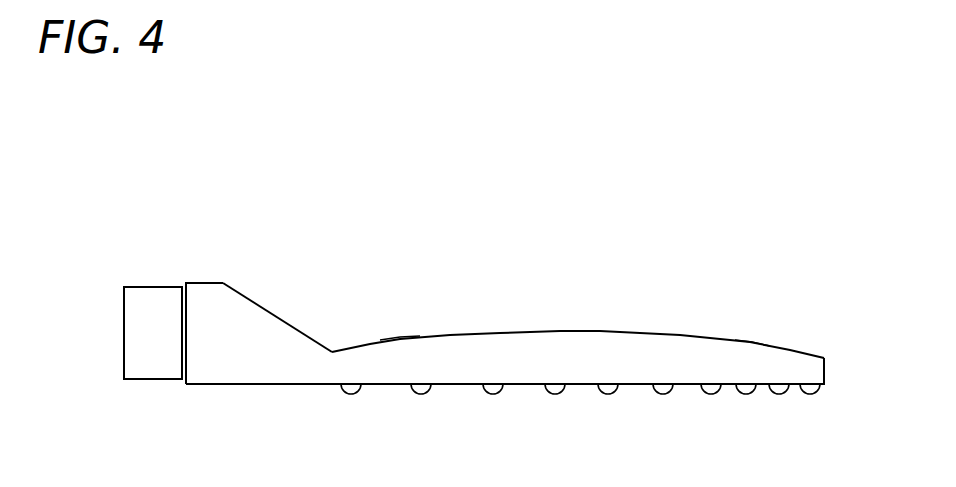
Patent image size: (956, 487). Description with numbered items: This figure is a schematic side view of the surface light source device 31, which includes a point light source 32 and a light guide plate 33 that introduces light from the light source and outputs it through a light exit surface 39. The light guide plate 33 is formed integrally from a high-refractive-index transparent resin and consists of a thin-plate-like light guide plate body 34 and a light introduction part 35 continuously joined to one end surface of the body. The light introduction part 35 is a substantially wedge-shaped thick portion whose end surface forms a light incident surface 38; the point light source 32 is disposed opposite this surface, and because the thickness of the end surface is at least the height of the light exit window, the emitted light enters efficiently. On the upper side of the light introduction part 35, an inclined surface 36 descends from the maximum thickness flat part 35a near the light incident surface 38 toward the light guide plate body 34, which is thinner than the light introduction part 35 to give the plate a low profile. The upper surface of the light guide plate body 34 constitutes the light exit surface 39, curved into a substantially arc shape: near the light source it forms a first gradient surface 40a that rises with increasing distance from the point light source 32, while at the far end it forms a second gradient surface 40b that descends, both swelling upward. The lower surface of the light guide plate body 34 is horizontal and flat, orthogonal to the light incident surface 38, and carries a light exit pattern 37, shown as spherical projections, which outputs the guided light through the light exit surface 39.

The surface light source device 31 is at (640, 192).
The point light source 32 is at (152, 303).
The light guide plate 33 is at (635, 377).
The light guide plate body 34 is at (446, 360).
The light introduction part 35 is at (248, 353).
The flat part 35a is at (204, 283).
The inclined surface 36 is at (270, 308).
The light exit pattern 37 is at (580, 421).
The light incident surface 38 is at (183, 345).
The light exit surface 39 is at (578, 328).
The first gradient surface 40a is at (402, 337).
The second gradient surface 40b is at (752, 342).